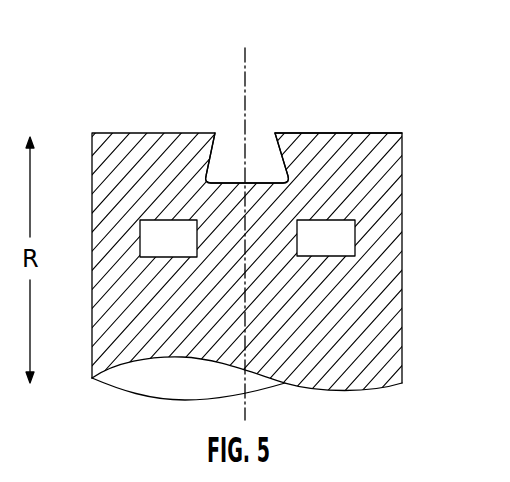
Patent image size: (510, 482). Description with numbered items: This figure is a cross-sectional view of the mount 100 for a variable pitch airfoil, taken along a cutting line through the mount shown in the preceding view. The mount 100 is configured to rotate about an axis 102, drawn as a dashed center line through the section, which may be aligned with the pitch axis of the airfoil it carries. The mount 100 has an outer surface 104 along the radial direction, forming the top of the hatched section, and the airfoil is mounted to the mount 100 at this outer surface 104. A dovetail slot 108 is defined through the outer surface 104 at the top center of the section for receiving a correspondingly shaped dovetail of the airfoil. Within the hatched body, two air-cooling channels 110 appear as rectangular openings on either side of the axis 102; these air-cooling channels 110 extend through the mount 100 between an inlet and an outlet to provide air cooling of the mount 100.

The mount 100 is at (402, 178).
The axis 102 is at (247, 78).
The outer surface 104 is at (362, 132).
The dovetail slot 108 is at (228, 141).
The air-cooling channel 110 is at (163, 240).